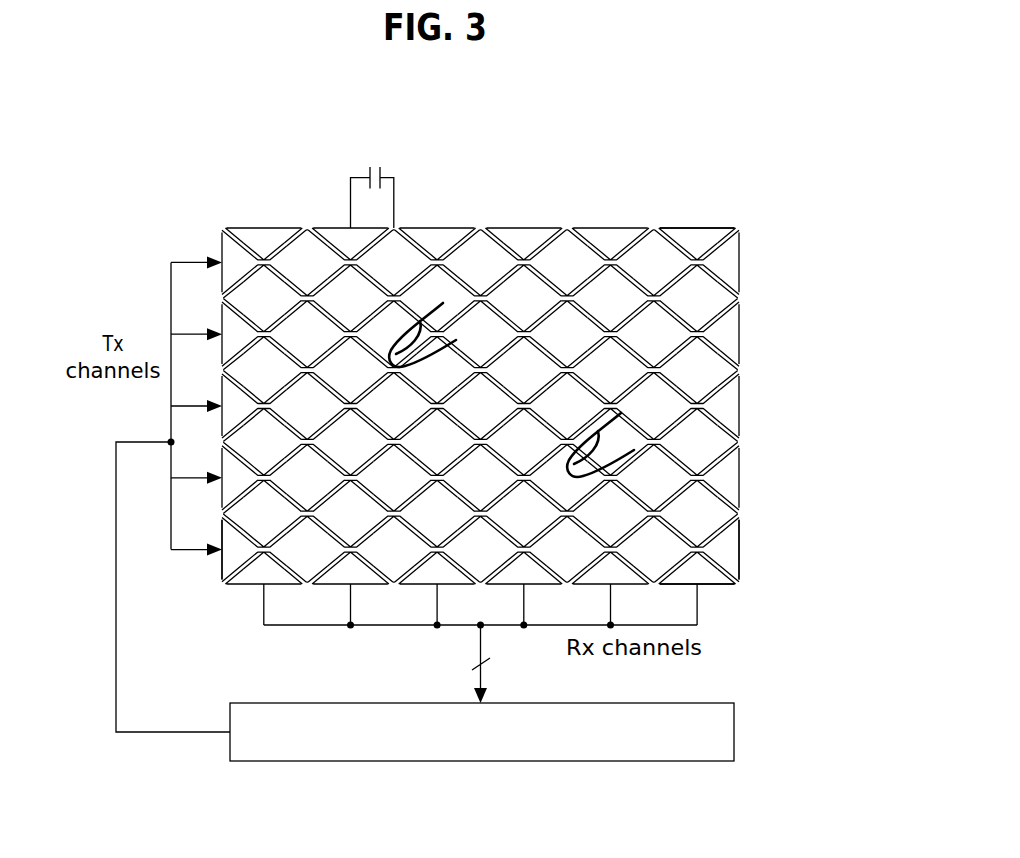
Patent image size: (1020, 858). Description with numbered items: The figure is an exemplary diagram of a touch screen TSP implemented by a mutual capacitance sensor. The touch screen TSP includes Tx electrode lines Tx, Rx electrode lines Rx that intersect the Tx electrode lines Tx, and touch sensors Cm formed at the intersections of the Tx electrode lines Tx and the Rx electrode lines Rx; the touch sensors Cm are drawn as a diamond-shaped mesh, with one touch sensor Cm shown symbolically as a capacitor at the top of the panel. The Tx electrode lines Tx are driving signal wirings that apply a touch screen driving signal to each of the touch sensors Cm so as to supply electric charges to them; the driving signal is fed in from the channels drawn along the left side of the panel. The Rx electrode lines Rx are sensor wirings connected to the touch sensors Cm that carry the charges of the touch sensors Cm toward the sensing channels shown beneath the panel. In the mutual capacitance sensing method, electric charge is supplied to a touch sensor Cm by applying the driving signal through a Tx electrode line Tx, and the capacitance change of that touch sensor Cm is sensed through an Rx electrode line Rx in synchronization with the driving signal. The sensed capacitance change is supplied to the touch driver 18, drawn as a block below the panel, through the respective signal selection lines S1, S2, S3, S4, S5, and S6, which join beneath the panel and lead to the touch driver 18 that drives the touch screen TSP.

The touch driver 18 is at (469, 741).
The touch screen TSP is at (662, 181).
The Tx electrode line Tx is at (735, 262).
The Rx electrode line Rx is at (526, 241).
The touch sensor Cm is at (372, 184).
The signal selection line S1 is at (282, 604).
The signal selection line S2 is at (369, 604).
The signal selection line S3 is at (455, 604).
The signal selection line S4 is at (542, 604).
The signal selection line S5 is at (629, 604).
The sense channel 6 S6 is at (715, 604).